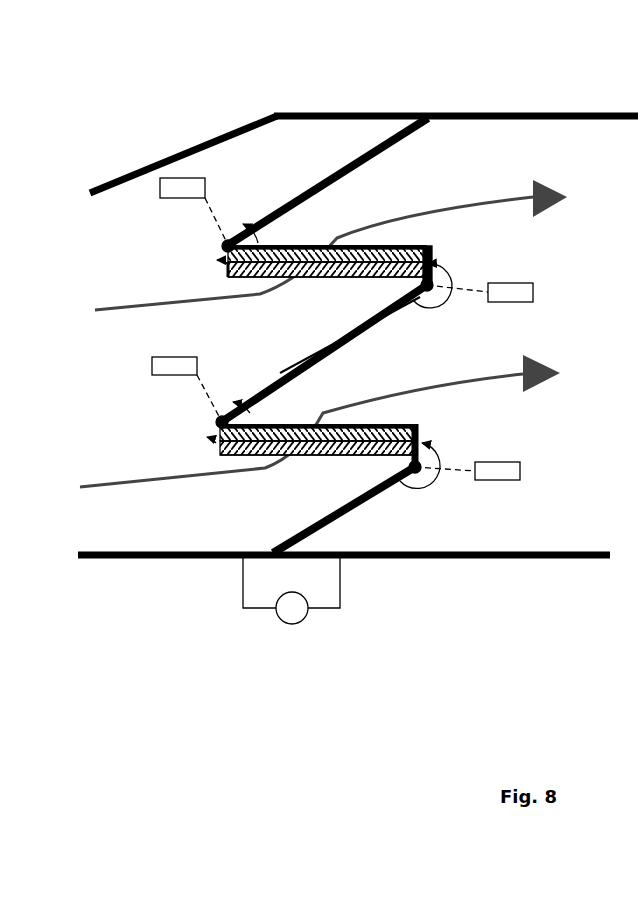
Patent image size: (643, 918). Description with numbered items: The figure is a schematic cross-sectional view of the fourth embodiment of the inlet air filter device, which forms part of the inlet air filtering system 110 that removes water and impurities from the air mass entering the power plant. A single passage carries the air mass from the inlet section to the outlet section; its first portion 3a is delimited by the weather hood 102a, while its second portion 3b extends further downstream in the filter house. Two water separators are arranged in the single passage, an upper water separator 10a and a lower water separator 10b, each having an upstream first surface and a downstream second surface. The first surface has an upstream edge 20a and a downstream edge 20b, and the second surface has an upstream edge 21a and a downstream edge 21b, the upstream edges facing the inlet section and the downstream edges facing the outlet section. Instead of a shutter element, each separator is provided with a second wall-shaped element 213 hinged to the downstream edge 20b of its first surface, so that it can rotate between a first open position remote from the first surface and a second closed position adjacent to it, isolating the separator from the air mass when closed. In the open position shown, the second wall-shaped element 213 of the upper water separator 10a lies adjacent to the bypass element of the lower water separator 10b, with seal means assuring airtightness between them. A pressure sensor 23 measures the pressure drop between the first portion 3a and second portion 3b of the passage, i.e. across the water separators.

The weather hood 102a is at (137, 170).
The inlet air filtering system 110 is at (498, 112).
The upper water separator 10a is at (395, 245).
The lower water separator 10b is at (413, 420).
The upstream edge of second surface 21a is at (222, 243).
The downstream edge of second surface 21b is at (432, 247).
The upstream edge of first surface 20a is at (228, 277).
The downstream edge of first surface 20b is at (438, 300).
The second wall-shaped element 213 is at (347, 328).
The pressure sensor 23 is at (305, 618).
The first portion of passage 3a is at (95, 346).
The second portion of passage 3b is at (580, 286).